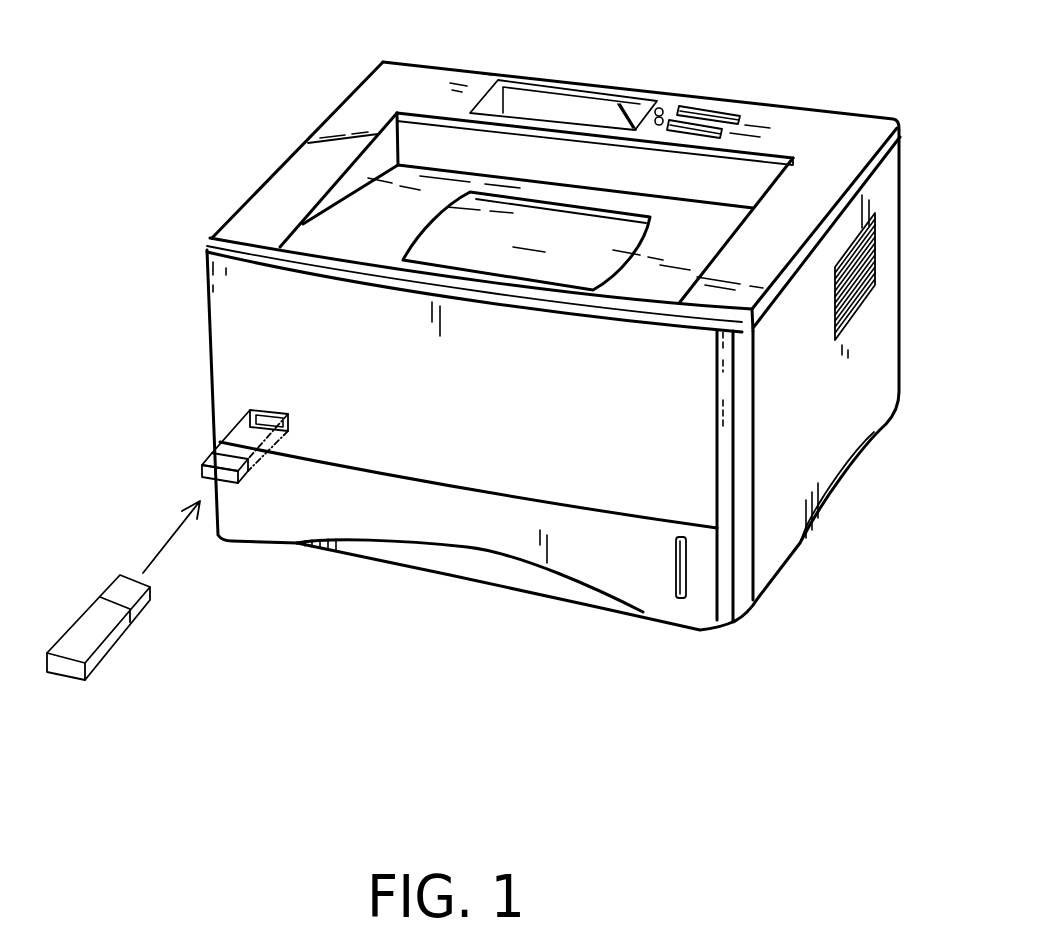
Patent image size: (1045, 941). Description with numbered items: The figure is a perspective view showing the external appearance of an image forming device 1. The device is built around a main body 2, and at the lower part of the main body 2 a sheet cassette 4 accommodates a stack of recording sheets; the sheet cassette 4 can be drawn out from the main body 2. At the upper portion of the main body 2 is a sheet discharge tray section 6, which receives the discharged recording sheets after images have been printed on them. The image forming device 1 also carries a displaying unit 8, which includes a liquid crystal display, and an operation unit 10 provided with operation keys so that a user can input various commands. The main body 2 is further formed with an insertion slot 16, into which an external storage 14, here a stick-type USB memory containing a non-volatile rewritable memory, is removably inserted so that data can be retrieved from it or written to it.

The image forming device 1 is at (284, 73).
The main body 2 is at (277, 203).
The sheet cassette 4 is at (467, 520).
The sheet discharge tray section 6 is at (710, 218).
The displaying unit 8 is at (557, 104).
The operation unit 10 is at (750, 94).
The external storage 14 is at (256, 474).
The insertion slot 16 is at (258, 419).